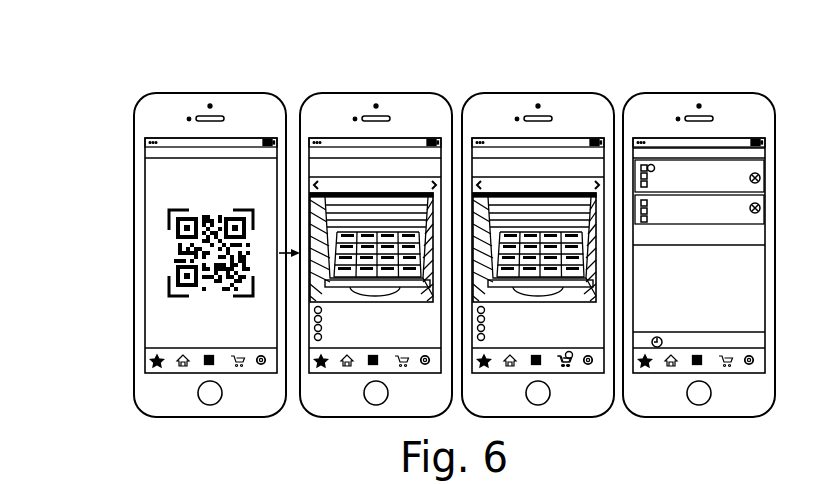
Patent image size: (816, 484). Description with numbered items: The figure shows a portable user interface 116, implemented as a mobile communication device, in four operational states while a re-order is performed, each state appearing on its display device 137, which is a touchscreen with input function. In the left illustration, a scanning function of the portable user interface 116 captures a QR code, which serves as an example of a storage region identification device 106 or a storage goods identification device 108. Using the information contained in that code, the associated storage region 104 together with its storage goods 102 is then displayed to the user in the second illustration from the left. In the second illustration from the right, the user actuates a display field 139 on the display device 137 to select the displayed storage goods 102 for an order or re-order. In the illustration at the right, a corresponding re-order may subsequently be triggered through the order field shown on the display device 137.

The portable user interface 116 is at (235, 83).
The display device 137 is at (158, 173).
The storage region 104 is at (353, 212).
The storage goods 102 is at (385, 228).
The storage region identification device 106 is at (140, 253).
The storage goods identification device 108 is at (172, 240).
The display field 139 is at (562, 372).